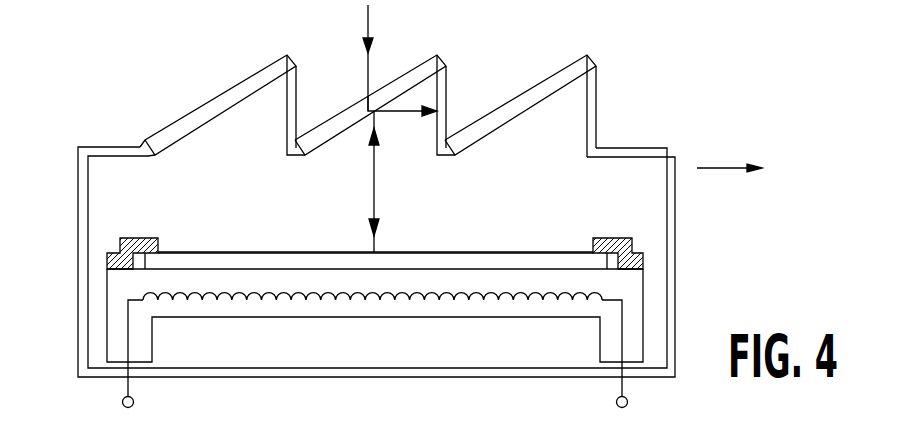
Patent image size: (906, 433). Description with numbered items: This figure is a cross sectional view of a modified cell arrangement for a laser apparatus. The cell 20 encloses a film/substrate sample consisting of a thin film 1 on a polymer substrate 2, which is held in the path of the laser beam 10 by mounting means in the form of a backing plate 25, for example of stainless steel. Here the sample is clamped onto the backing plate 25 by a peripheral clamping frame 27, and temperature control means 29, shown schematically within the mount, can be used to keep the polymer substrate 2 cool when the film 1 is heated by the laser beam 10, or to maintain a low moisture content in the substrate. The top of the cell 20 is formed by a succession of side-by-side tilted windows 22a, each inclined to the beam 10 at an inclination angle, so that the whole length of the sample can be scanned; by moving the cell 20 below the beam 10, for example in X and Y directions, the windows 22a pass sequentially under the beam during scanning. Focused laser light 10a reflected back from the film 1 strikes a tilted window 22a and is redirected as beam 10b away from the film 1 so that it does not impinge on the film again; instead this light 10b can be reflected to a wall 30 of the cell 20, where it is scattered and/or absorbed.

The film 1 is at (235, 252).
The polymer substrate 2 is at (271, 260).
The laser beam 10 is at (368, 21).
The reflected laser light 10a is at (375, 183).
The reflected beam 10b is at (403, 111).
The cell 20 is at (376, 211).
The tilted windows 22a is at (187, 117).
The backing plate 25 is at (351, 305).
The peripheral clamping frame 27 is at (138, 238).
The temperature control means 29 is at (513, 293).
The wall 30 is at (438, 134).